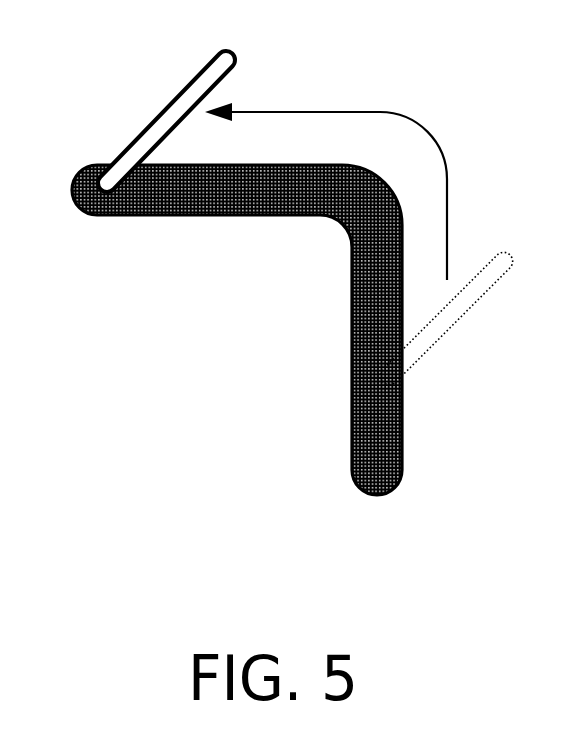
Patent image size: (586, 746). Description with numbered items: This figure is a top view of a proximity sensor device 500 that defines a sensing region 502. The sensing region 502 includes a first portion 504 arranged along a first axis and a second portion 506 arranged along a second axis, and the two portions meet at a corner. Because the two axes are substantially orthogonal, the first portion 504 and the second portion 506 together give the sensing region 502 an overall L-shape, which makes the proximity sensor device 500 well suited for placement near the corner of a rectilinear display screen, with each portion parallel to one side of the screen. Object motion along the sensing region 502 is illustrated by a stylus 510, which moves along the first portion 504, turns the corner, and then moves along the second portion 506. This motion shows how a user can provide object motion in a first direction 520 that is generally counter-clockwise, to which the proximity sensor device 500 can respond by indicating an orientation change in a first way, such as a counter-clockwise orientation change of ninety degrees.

The proximity sensor device 500 is at (322, 574).
The sensing region 502 is at (332, 233).
The first portion 504 is at (350, 340).
The second portion 506 is at (155, 215).
The stylus 510 is at (168, 110).
The first direction 520 is at (431, 140).